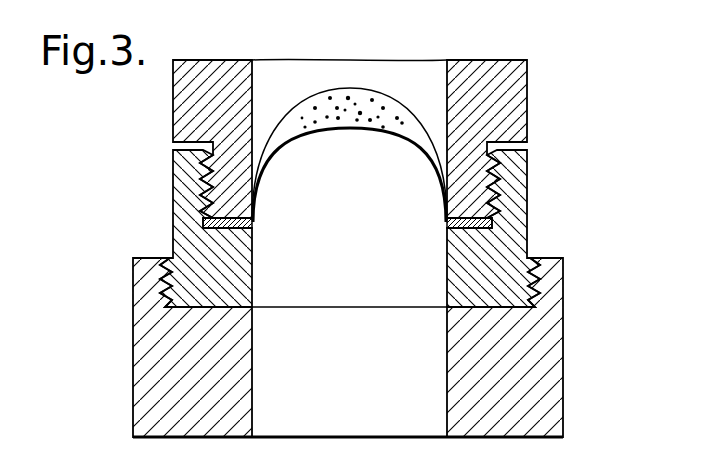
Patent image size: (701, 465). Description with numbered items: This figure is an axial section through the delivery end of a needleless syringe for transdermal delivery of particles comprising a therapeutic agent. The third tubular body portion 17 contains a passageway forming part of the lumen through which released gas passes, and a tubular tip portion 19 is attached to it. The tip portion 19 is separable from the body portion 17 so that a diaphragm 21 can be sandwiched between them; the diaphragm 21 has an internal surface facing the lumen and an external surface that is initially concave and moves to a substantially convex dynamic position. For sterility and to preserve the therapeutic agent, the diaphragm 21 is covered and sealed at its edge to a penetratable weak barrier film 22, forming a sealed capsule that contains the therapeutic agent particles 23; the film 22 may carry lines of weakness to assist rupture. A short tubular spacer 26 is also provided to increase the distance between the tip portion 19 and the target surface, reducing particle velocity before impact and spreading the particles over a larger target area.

The third tubular body portion 17 is at (508, 118).
The tubular tip portion 19 is at (510, 220).
The diaphragm 21 is at (330, 90).
The weak barrier film 22 is at (405, 150).
The therapeutic agent particles 23 is at (355, 108).
The short tubular spacer 26 is at (533, 357).